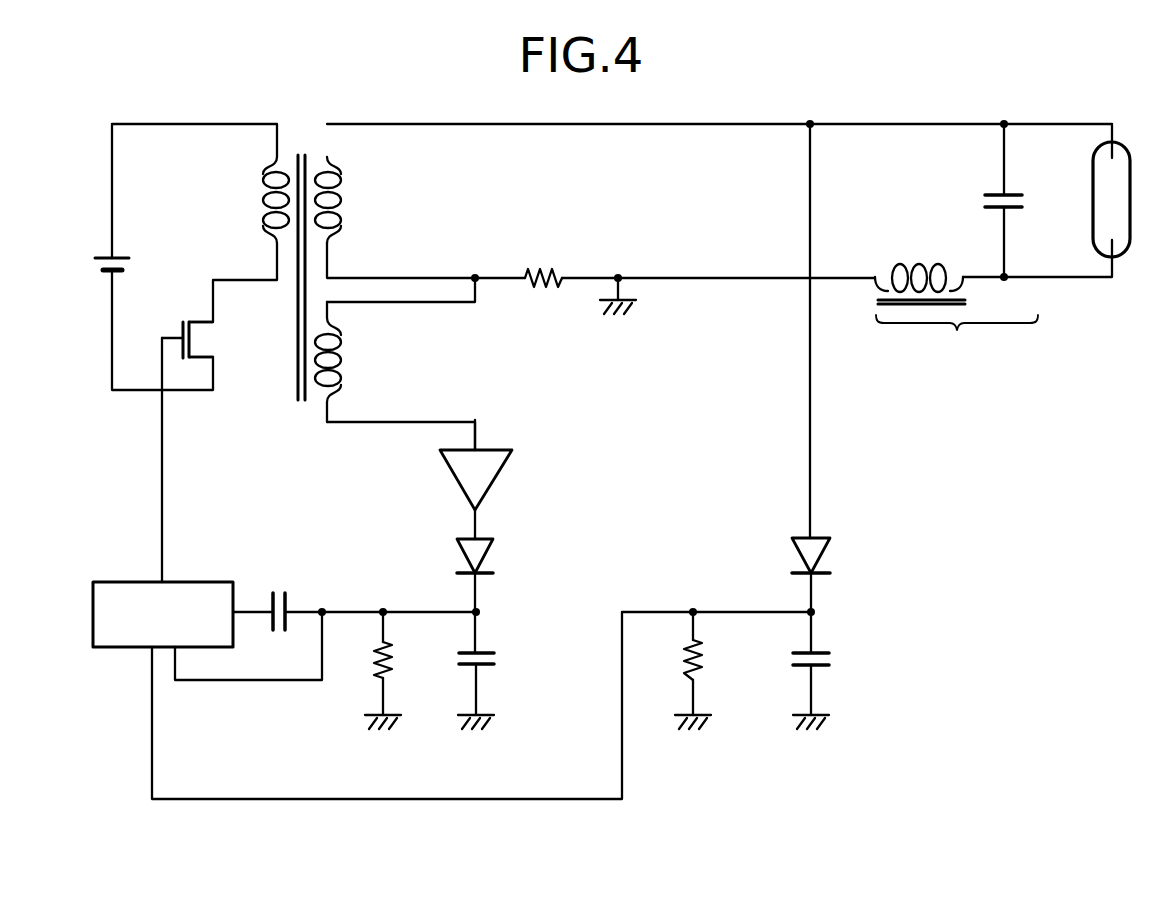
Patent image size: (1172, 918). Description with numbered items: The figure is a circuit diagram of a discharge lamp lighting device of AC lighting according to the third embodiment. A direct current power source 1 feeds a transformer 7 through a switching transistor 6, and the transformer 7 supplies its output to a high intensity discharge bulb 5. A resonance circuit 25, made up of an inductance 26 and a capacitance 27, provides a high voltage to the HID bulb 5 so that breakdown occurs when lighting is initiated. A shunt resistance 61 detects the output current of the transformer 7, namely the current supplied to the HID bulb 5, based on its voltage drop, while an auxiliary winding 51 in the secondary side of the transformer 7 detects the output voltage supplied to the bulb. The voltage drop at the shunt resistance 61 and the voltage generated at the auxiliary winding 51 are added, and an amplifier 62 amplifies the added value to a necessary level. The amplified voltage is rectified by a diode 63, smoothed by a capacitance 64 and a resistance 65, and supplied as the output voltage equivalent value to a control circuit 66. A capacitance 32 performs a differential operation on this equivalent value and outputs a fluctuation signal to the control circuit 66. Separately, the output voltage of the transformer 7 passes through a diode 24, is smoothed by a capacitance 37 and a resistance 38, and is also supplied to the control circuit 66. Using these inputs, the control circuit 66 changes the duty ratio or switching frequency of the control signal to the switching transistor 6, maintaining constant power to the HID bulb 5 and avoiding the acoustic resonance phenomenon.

The direct current power source 1 is at (94, 265).
The high intensity discharge bulb 5 is at (1135, 202).
The switching transistor 6 is at (216, 343).
The transformer 7 is at (301, 148).
The diode 24 is at (830, 553).
The resonance circuit 25 is at (956, 288).
The inductance 26 is at (922, 260).
The capacitance 27 is at (1028, 202).
The capacitance 32 is at (283, 590).
The capacitance 37 is at (836, 660).
The resistance 38 is at (708, 660).
The auxiliary winding 51 is at (305, 406).
The shunt resistance 61 is at (539, 260).
The amplifier 62 is at (502, 444).
The diode 63 is at (497, 556).
The capacitance 64 is at (500, 658).
The resistance 65 is at (400, 658).
The control circuit 66 is at (128, 580).